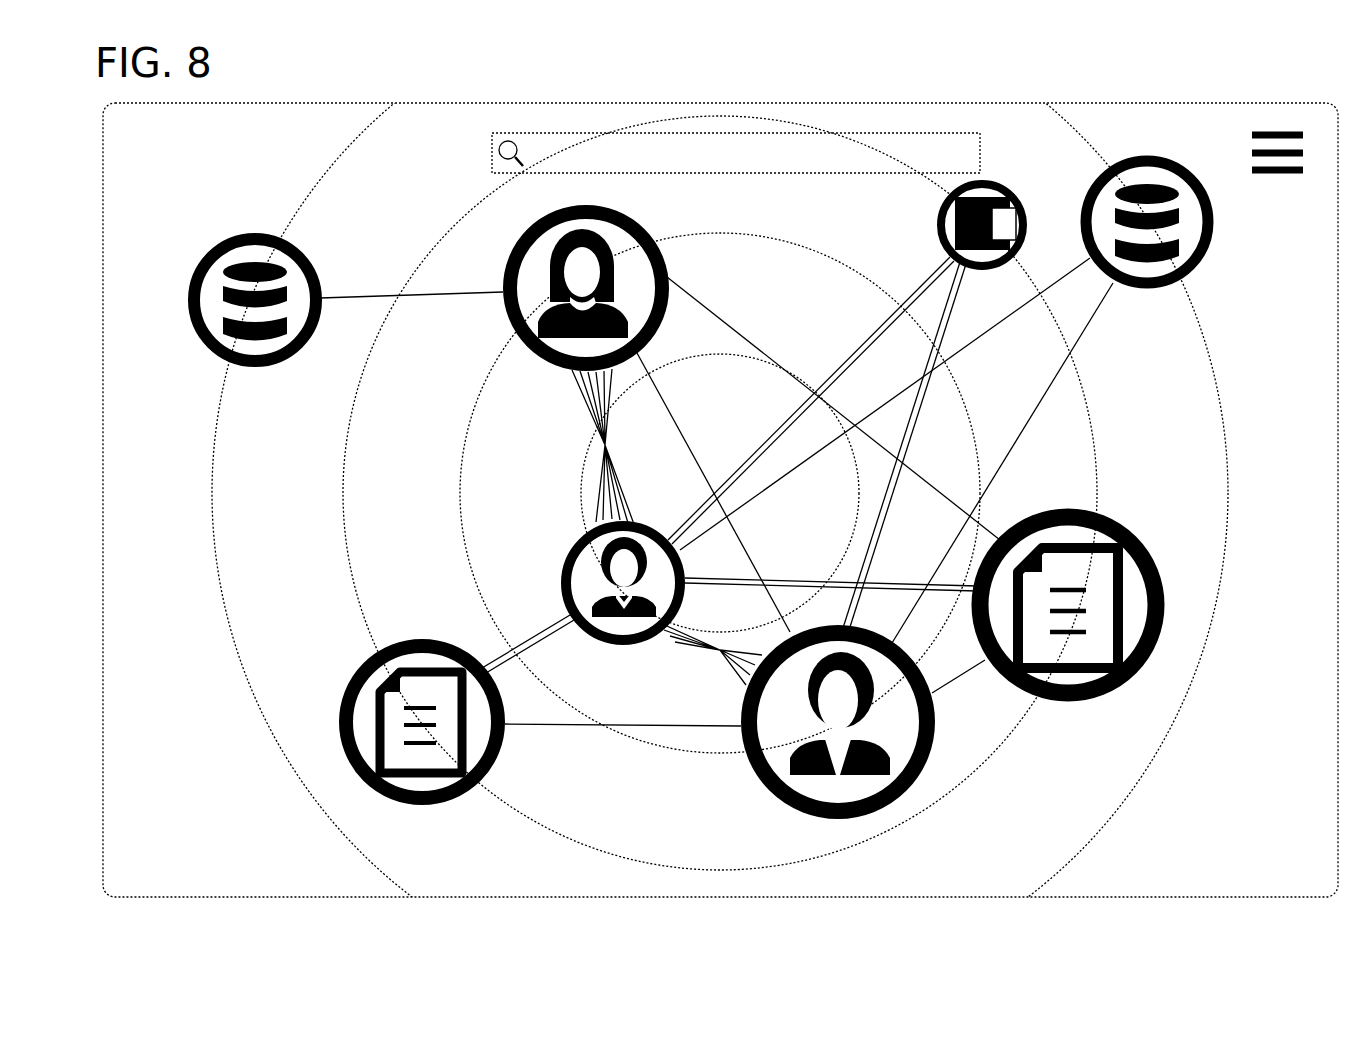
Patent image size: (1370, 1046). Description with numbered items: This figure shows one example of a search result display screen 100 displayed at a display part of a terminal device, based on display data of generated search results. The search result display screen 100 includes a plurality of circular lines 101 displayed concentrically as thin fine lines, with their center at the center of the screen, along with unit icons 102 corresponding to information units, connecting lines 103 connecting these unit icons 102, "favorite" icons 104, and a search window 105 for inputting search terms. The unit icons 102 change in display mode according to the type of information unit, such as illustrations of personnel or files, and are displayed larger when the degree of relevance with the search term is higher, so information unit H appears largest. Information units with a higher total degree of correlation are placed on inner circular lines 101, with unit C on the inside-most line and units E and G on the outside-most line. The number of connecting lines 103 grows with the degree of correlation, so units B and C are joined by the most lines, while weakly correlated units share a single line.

The search result display screen 100 is at (1208, 100).
The circular lines 101 is at (543, 832).
The unit icons 102 is at (300, 254).
The connecting lines 103 is at (583, 402).
The "favorite" icons 104 is at (1283, 128).
The search window 105 is at (858, 133).